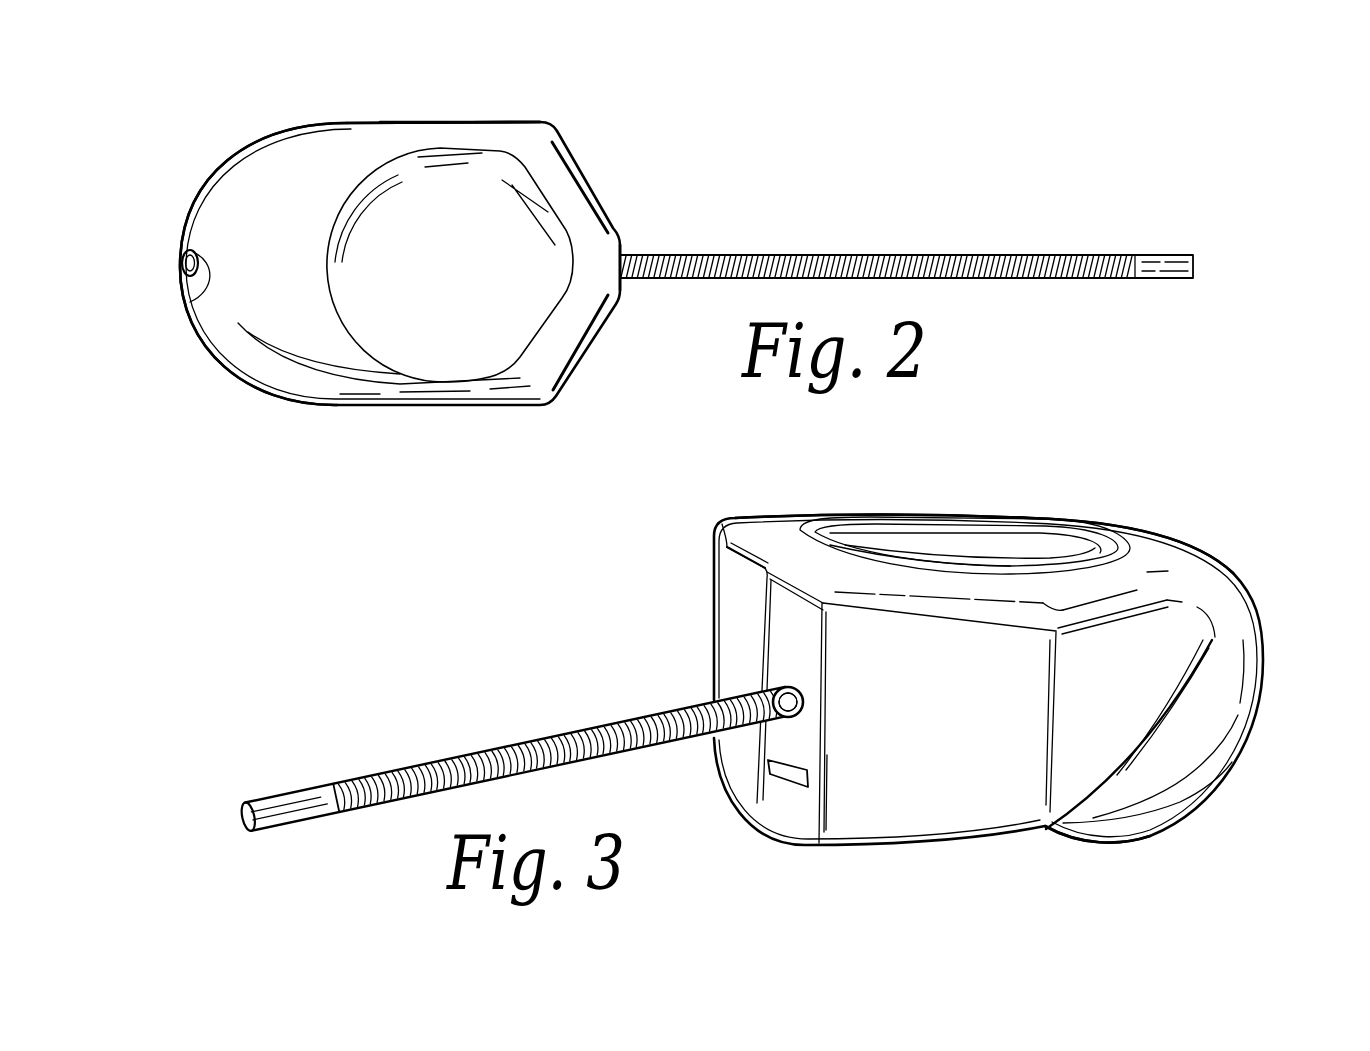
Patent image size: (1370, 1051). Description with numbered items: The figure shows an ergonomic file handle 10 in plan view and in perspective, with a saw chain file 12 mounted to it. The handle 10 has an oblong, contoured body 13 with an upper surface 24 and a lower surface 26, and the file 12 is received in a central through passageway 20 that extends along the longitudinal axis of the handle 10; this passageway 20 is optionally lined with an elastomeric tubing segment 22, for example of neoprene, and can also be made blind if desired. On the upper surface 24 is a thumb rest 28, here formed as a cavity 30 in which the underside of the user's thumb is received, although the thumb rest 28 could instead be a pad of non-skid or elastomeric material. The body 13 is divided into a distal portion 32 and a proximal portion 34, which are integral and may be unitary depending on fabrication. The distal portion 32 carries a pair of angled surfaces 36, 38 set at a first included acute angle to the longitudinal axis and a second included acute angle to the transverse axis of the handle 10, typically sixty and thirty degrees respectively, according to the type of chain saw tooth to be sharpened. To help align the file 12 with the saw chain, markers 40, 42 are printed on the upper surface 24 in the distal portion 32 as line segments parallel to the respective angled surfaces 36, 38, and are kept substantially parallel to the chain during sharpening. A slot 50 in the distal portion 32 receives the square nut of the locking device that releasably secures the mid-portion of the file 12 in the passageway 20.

In FIG. 2, the ergonomic file handle 10 is at (230, 392).
In FIG. 3, the ergonomic file handle 10 is at (1255, 805).
In FIG. 2, the saw chain file 12 is at (897, 257).
In FIG. 3, the saw chain file 12 is at (423, 767).
In FIG. 2, the oblong, contoured body 13 is at (345, 120).
In FIG. 3, the oblong, contoured body 13 is at (1177, 525).
In FIG. 2, the central through passageway 20 is at (180, 262).
In FIG. 3, the central through passageway 20 is at (803, 711).
In FIG. 2, the elastomeric tubing segment 22 is at (190, 302).
In FIG. 3, the elastomeric tubing segment 22 is at (799, 690).
In FIG. 2, the upper surface 24 is at (435, 138).
In FIG. 3, the upper surface 24 is at (1143, 575).
In FIG. 3, the lower surface 26 is at (1120, 843).
In FIG. 2, the thumb rest 28 is at (448, 352).
In FIG. 3, the thumb rest 28 is at (1035, 552).
In FIG. 2, the cavity 30 is at (456, 287).
In FIG. 3, the cavity 30 is at (905, 550).
In FIG. 2, the distal portion 32 is at (597, 272).
In FIG. 3, the distal portion 32 is at (777, 807).
In FIG. 2, the proximal portion 34 is at (253, 193).
In FIG. 3, the proximal portion 34 is at (1220, 716).
In FIG. 3, the angled surface 36 is at (742, 617).
In FIG. 3, the angled surface 38 is at (958, 803).
In FIG. 2, the marker 40 is at (590, 338).
In FIG. 3, the marker 40 is at (740, 562).
In FIG. 2, the marker 42 is at (590, 195).
In FIG. 3, the marker 42 is at (937, 592).
In FIG. 3, the slot 50 is at (797, 789).